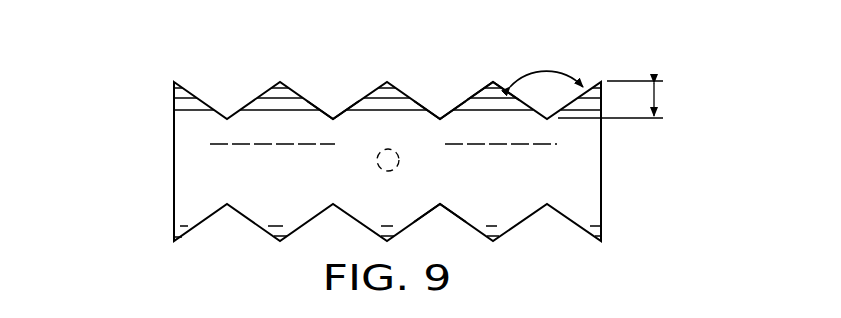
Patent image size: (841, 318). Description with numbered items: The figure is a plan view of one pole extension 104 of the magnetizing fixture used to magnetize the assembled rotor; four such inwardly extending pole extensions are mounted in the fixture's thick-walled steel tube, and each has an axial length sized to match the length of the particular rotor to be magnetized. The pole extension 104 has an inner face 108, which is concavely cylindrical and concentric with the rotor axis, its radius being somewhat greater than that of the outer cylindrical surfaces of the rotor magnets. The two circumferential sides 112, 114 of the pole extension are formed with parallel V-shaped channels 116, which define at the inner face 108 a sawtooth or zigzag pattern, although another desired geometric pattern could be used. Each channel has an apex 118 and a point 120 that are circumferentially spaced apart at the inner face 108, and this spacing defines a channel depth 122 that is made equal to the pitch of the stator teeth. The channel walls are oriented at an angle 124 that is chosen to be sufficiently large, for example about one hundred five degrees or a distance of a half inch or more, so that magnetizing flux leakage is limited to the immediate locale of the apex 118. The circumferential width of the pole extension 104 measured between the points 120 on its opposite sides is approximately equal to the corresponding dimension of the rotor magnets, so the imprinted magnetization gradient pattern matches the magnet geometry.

The pole extension 104 is at (172, 163).
The inner face 108 is at (578, 178).
The circumferential side 112 is at (293, 90).
The circumferential side 114 is at (268, 235).
The V-shaped channel 116 is at (338, 109).
The apex 118 is at (440, 117).
The point 120 is at (493, 80).
The channel depth 122 is at (660, 100).
The angle 124 is at (545, 67).